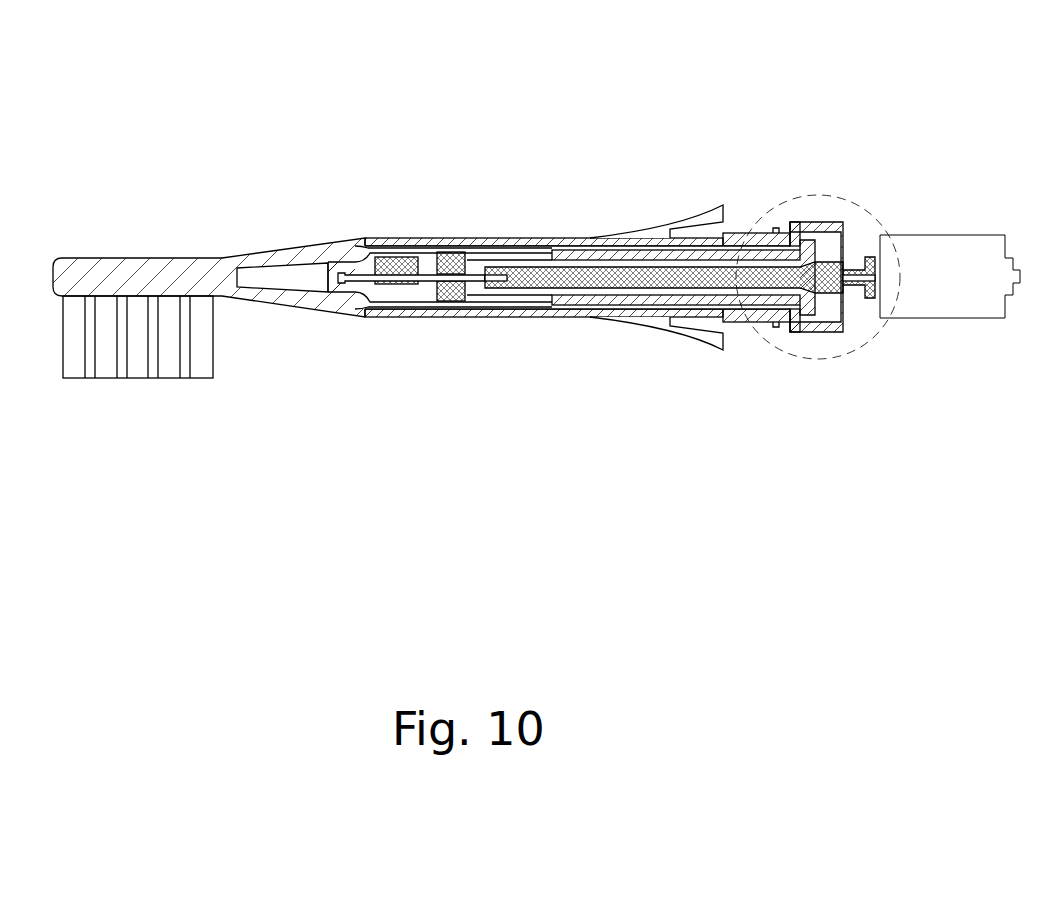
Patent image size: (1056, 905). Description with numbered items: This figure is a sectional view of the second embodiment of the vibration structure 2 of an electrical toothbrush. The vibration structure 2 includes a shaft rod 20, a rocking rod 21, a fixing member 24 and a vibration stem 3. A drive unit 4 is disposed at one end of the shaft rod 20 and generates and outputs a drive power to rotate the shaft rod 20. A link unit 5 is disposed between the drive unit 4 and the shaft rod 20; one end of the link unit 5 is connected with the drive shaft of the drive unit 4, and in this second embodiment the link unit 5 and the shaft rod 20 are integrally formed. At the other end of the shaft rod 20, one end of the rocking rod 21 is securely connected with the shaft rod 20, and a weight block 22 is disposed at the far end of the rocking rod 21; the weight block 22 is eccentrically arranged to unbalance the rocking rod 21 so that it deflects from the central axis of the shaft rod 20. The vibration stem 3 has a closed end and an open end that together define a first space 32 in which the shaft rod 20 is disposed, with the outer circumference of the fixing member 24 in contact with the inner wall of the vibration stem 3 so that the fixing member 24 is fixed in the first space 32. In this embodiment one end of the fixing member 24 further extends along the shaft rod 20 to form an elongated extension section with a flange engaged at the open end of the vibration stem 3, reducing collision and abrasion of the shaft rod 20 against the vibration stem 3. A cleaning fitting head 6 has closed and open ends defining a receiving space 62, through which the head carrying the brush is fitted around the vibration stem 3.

The vibration structure 2 is at (208, 113).
The receiving space 62 is at (262, 278).
The weight block 22 is at (385, 262).
The fixing member 24 is at (448, 258).
The cleaning fitting head 6 is at (604, 238).
The first space 32 is at (760, 240).
The link unit 5 is at (878, 256).
The rocking rod 21 is at (415, 290).
The shaft rod 20 is at (600, 300).
The vibration stem 3 is at (665, 312).
The drive unit 4 is at (935, 290).